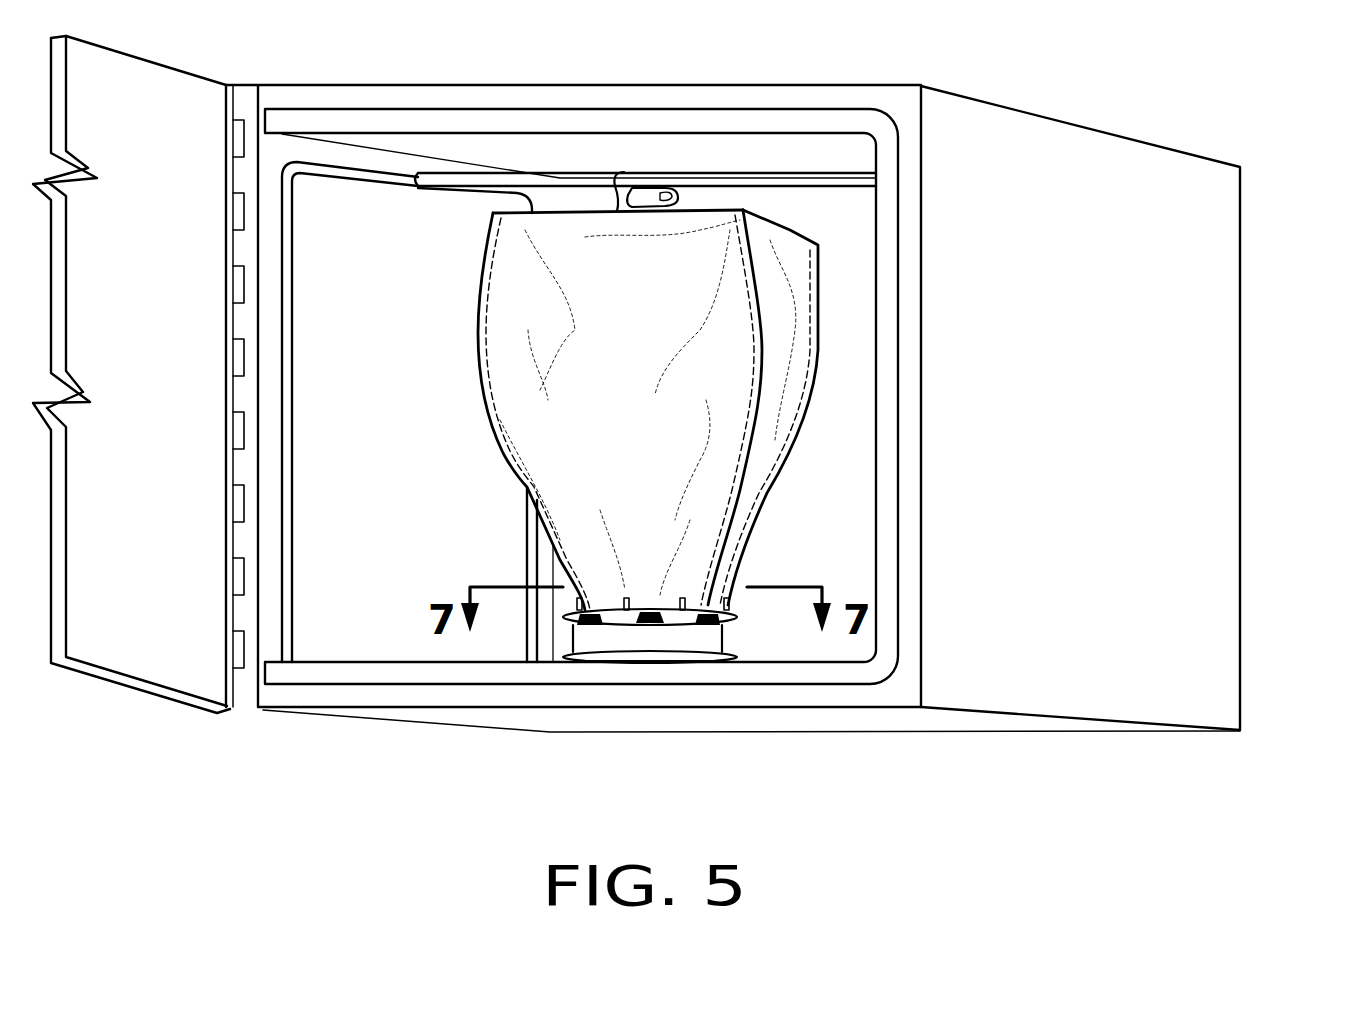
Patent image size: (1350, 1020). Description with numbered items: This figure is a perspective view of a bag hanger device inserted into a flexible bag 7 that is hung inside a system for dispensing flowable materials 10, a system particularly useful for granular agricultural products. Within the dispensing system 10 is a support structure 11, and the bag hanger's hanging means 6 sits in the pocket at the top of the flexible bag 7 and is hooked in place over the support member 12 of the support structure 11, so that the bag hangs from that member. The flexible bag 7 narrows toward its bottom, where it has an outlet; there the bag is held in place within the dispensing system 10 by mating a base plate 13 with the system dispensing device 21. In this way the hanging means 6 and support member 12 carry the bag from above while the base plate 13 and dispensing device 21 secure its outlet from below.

The hanging means 6 is at (646, 206).
The flexible bag 7 is at (520, 359).
The system for dispensing flowable materials 10 is at (1146, 490).
The support structure 11 is at (290, 232).
The support member 12 is at (442, 174).
The base plate 13 is at (738, 603).
The system dispensing device 21 is at (647, 642).